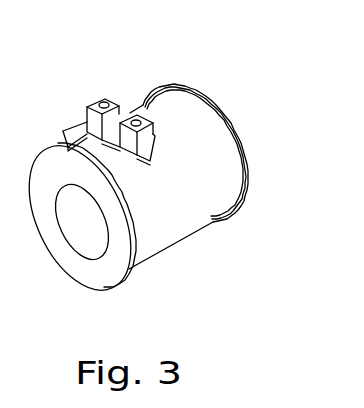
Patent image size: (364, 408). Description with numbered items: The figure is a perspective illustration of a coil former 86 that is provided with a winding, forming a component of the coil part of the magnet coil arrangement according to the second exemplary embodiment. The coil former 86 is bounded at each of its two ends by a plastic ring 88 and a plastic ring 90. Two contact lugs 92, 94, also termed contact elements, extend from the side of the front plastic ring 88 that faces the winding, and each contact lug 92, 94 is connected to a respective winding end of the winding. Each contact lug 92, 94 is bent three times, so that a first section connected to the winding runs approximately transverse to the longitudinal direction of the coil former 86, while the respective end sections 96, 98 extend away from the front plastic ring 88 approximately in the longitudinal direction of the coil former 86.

The coil former 86 is at (202, 150).
The plastic ring 88 is at (98, 272).
The plastic ring 90 is at (251, 186).
The contact lug 92 is at (80, 128).
The contact lug 94 is at (162, 222).
The end section 96 is at (97, 98).
The end section 98 is at (137, 120).